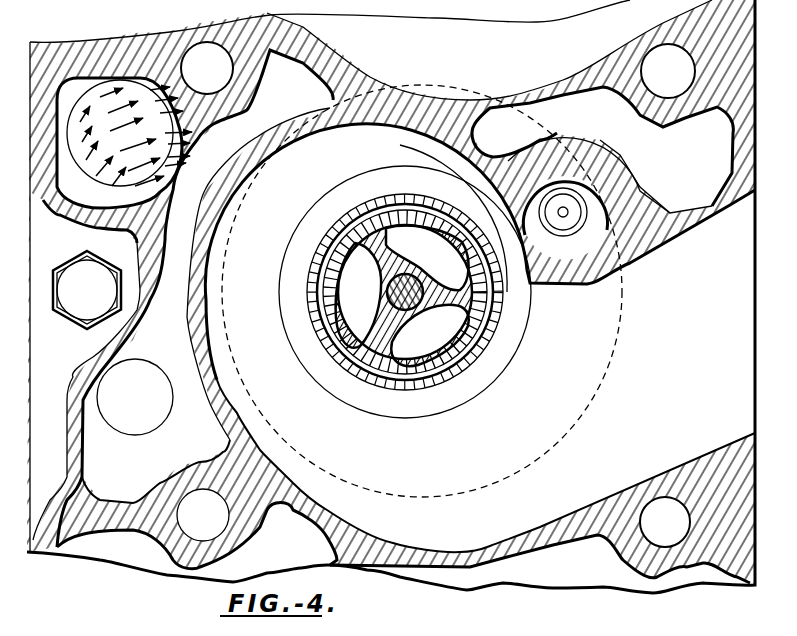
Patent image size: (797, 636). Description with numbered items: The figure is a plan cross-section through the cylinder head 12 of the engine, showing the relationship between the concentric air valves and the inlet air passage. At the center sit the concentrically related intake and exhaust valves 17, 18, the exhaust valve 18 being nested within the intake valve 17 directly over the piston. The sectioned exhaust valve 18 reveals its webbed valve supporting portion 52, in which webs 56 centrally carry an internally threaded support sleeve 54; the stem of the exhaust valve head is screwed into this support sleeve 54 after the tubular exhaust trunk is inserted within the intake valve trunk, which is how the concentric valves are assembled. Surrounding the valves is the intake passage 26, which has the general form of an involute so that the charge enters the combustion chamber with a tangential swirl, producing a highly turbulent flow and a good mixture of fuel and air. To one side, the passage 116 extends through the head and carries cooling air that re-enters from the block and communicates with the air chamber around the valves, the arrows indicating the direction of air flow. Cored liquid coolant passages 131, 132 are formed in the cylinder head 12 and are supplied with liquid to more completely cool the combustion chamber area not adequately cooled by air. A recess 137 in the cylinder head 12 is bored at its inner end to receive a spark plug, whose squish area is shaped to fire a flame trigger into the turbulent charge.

The cylinder head 12 is at (737, 577).
The intake valve 17 is at (325, 336).
The exhaust valve 18 is at (400, 358).
The intake passage 26 is at (691, 369).
The webbed valve supporting portion 52 is at (482, 312).
The support sleeve 54 is at (380, 305).
The webs 56 is at (447, 290).
The passage 116 is at (105, 100).
The cored liquid coolant passage 131 is at (580, 98).
The cored liquid coolant passage 132 is at (127, 479).
The recess 137 is at (590, 245).